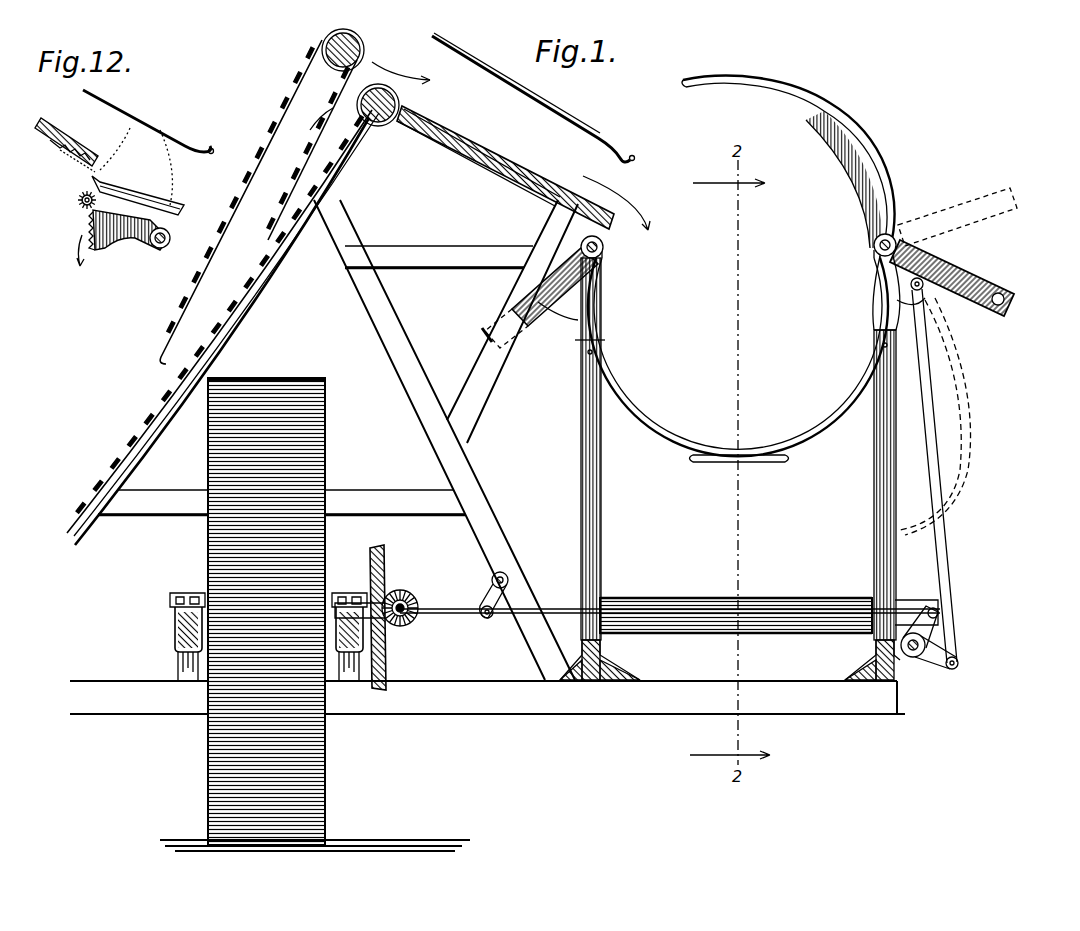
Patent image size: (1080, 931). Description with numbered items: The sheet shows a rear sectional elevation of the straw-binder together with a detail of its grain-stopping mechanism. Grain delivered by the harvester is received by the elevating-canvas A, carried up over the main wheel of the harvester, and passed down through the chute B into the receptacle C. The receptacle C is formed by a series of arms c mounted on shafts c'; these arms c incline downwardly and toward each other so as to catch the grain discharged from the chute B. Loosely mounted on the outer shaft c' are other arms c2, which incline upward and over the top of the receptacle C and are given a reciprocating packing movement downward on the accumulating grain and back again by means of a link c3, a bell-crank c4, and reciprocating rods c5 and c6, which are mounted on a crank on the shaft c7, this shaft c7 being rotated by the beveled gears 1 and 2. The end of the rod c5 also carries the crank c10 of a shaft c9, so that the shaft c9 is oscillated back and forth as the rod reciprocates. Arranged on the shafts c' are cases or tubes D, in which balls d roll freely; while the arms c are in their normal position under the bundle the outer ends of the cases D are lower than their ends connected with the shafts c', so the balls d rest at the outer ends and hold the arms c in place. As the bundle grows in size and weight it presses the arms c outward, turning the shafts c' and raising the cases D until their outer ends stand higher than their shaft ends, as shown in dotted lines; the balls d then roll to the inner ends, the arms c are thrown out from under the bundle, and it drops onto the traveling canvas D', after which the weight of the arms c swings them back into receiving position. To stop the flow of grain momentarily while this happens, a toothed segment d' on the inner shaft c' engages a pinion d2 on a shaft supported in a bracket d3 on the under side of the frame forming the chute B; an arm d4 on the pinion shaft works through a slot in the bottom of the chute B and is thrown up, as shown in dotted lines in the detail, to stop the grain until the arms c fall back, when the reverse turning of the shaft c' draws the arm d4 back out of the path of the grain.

In FIG. 1, the elevating-canvas A is at (172, 380).
In FIG. 1, the chute B is at (523, 131).
In FIG. 12, the chute B is at (124, 128).
In FIG. 1, the receptacle C is at (738, 356).
In FIG. 1, the cases or tubes D is at (743, 268).
In FIG. 1, the traveling canvas D' is at (736, 601).
In FIG. 1, the arms c is at (834, 416).
In FIG. 1, the shafts c' is at (738, 245).
In FIG. 12, the shafts c' is at (169, 249).
In FIG. 1, the arms c2 is at (708, 80).
In FIG. 1, the link c3 is at (938, 437).
In FIG. 1, the bell-crank c4 is at (930, 658).
In FIG. 1, the reciprocating rod c5 is at (870, 600).
In FIG. 1, the reciprocating rod c6 is at (450, 610).
In FIG. 1, the shaft c7 is at (410, 624).
In FIG. 1, the oscillating shaft c9 is at (500, 572).
In FIG. 1, the crank c10 is at (494, 616).
In FIG. 1, the balls d is at (1016, 302).
In FIG. 1, the beveled gear 1 is at (389, 560).
In FIG. 1, the beveled gear 2 is at (408, 594).
In FIG. 12, the toothed segment d' is at (122, 239).
In FIG. 12, the pinion d2 is at (78, 202).
In FIG. 12, the bracket d3 is at (62, 176).
In FIG. 12, the arm d4 is at (125, 196).